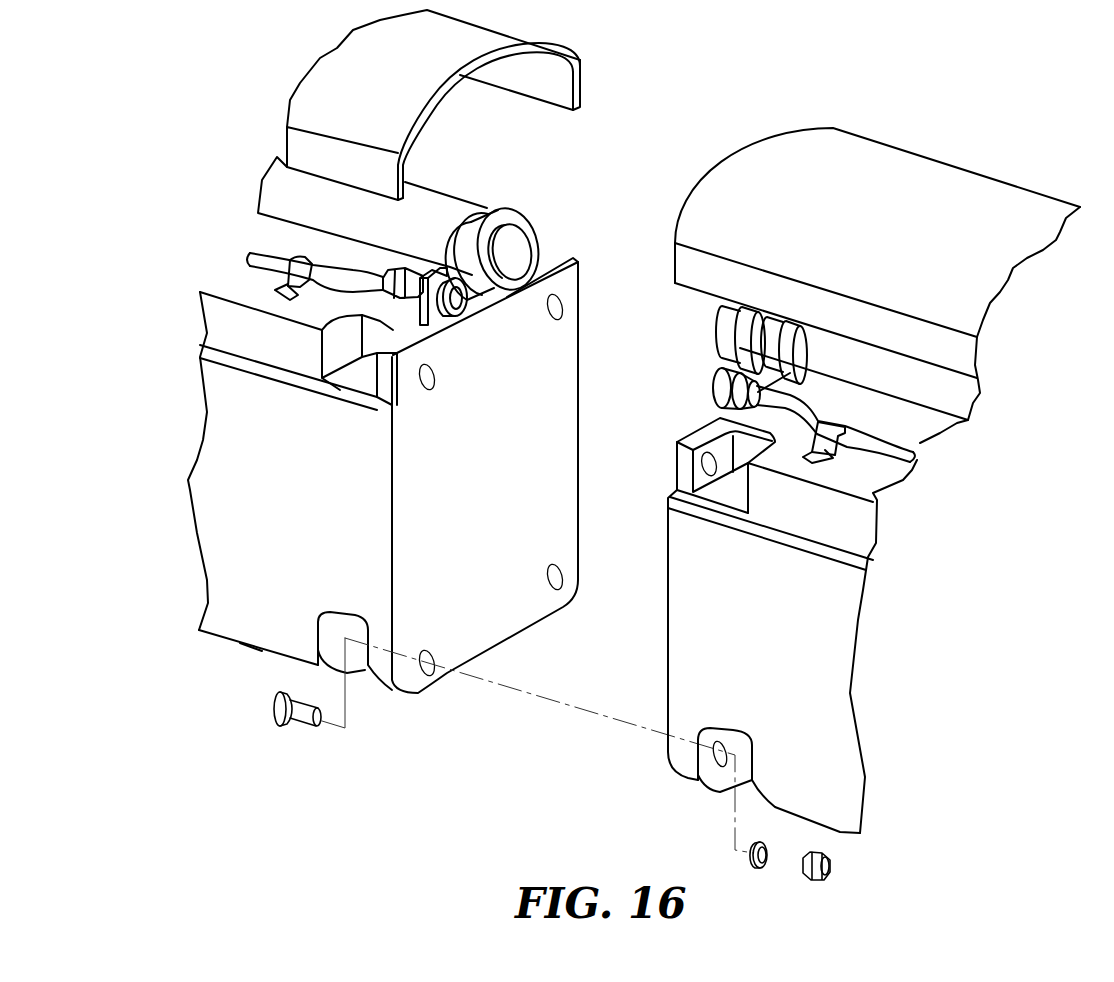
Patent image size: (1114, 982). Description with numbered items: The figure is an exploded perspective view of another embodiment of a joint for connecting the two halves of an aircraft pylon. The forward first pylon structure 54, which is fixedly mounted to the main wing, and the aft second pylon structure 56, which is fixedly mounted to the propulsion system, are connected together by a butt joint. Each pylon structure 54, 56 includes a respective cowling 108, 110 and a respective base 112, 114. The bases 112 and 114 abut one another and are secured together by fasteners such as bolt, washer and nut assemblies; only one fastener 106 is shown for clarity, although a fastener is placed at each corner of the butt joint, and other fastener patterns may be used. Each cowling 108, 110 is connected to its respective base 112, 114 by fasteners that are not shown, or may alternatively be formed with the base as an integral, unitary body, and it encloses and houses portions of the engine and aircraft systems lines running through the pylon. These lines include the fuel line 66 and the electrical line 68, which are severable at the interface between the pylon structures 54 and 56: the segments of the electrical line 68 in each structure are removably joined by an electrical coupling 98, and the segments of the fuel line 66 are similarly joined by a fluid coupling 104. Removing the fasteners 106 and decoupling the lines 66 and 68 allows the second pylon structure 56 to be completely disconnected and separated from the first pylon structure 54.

The first pylon structure 54 is at (190, 530).
The second pylon structure 56 is at (872, 706).
The fuel line 66 is at (200, 279).
The electrical line 68 is at (422, 190).
The electrical coupling 98 is at (517, 203).
The fluid coupling 104 is at (478, 212).
The fastener 106 is at (272, 713).
The cowling 108 is at (500, 37).
The cowling 110 is at (882, 163).
The base 112 is at (240, 643).
The base 114 is at (841, 833).